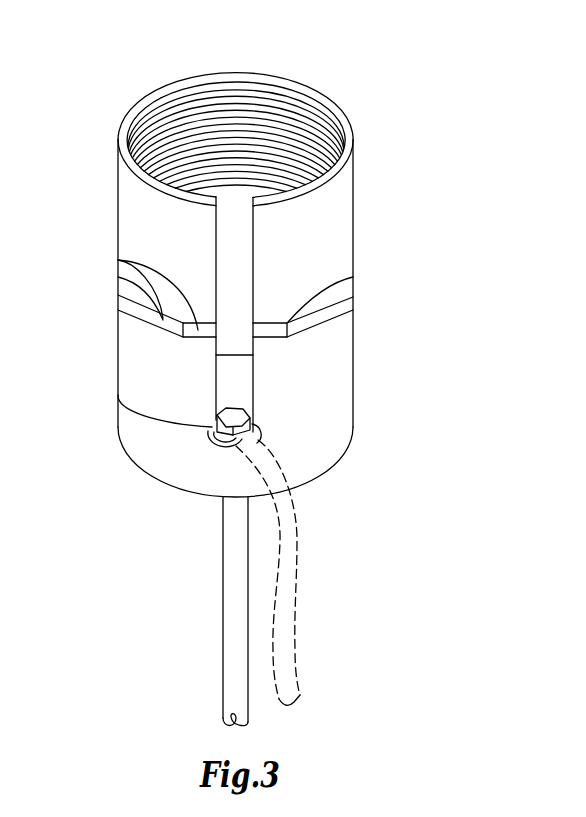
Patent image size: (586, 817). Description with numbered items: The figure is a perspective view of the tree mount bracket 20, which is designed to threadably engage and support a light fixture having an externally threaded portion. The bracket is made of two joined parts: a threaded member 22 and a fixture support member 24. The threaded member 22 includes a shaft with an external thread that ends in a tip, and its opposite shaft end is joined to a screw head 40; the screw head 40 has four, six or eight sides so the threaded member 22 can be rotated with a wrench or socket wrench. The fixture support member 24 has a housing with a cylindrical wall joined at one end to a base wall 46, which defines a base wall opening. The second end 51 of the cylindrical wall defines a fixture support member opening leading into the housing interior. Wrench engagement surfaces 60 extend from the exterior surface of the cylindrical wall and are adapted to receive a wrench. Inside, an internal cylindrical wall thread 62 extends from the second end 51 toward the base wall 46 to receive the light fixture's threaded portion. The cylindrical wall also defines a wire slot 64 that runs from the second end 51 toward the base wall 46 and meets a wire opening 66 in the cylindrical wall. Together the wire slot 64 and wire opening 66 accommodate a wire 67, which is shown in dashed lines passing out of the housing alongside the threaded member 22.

The tree mount bracket 20 is at (324, 218).
The threaded member 22 is at (232, 592).
The fixture support member 24 is at (128, 341).
The screw head 40 is at (247, 412).
The base wall 46 is at (243, 380).
The second end of the cylindrical wall 51 is at (124, 118).
The wrench engagement surfaces 60 is at (118, 260).
The internal cylindrical wall thread 62 is at (284, 100).
The wire slot 64 is at (245, 297).
The wire opening 66 is at (200, 425).
The wire 67 is at (290, 522).